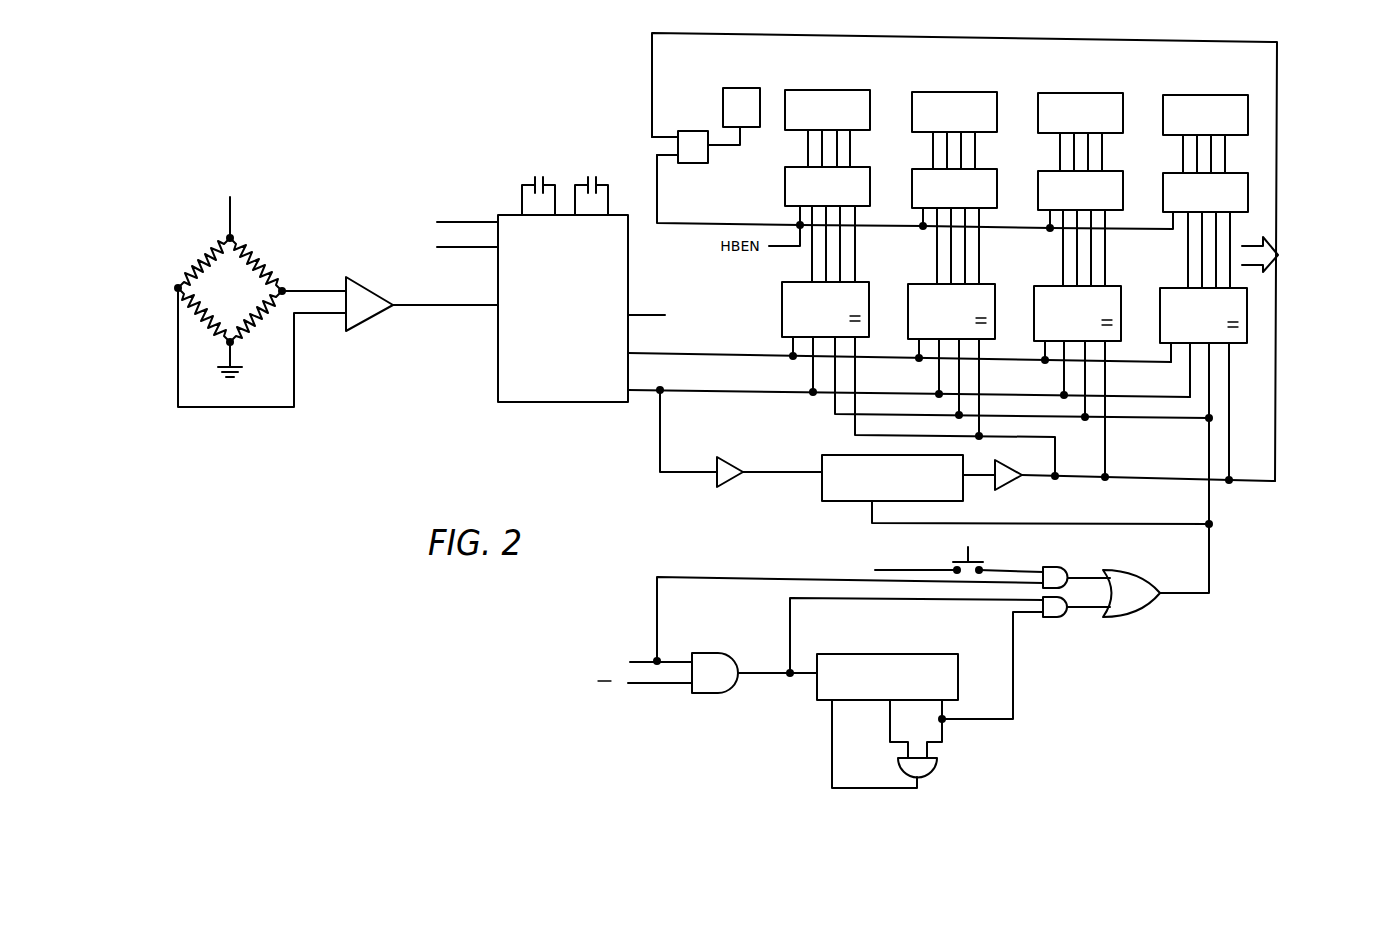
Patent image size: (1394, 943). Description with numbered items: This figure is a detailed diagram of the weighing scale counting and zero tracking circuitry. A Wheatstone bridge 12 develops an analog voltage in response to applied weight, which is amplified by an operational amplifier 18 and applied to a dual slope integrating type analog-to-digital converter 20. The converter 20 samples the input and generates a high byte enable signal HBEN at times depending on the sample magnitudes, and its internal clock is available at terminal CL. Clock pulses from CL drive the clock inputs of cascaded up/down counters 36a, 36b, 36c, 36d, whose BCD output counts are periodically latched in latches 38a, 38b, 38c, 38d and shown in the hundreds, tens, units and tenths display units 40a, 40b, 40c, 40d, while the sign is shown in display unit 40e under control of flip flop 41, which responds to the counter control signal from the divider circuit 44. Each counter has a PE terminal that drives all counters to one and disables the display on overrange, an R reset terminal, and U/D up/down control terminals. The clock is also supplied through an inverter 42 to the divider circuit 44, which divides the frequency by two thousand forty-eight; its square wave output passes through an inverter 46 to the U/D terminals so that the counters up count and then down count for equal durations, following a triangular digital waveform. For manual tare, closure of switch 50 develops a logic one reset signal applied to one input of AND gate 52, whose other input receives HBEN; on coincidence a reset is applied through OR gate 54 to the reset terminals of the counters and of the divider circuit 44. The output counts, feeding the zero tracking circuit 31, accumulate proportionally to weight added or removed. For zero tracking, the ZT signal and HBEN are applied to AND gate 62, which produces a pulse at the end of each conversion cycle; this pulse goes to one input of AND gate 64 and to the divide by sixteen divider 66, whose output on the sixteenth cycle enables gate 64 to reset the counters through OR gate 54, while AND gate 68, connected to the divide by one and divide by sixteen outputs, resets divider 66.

The Wheatstone bridge 12 is at (270, 247).
The operational amplifier 18 is at (362, 320).
The dual slope integrating type analog-to-digital converter 20 is at (545, 378).
The zero tracking circuit 31 is at (1254, 258).
The up/down counter 36a is at (783, 296).
The up/down counter 36b is at (910, 298).
The up/down counter 36c is at (1036, 300).
The up/down counter 36d is at (1162, 302).
The latch 38a is at (785, 190).
The latch 38b is at (915, 186).
The latch 38c is at (1043, 188).
The latch 38d is at (1168, 189).
The display unit 40a is at (867, 103).
The display unit 40b is at (990, 104).
The display unit 40c is at (1115, 105).
The display unit 40d is at (1238, 107).
The display unit 40e is at (730, 101).
The flip flop 41 is at (694, 152).
The inverter 42 is at (728, 481).
The divider circuit 44 is at (841, 488).
The inverter 46 is at (1008, 483).
The switch 50 is at (918, 566).
The AND gate 52 is at (1058, 572).
The OR gate 54 is at (1143, 607).
The AND gate 62 is at (716, 691).
The AND gate 64 is at (1056, 615).
The divide by sixteen divider 66 is at (847, 664).
The AND gate 68 is at (935, 766).